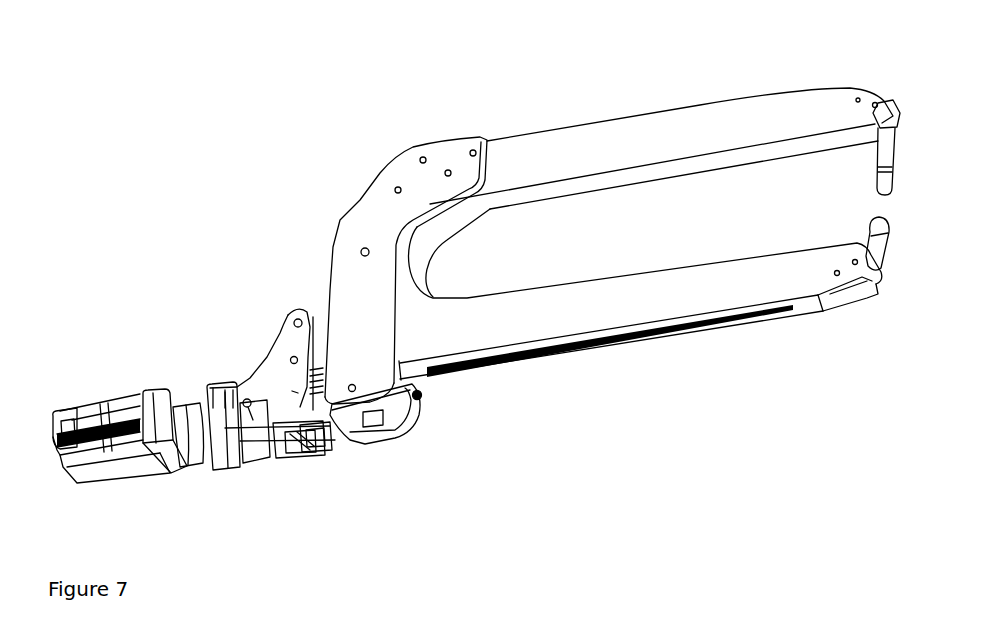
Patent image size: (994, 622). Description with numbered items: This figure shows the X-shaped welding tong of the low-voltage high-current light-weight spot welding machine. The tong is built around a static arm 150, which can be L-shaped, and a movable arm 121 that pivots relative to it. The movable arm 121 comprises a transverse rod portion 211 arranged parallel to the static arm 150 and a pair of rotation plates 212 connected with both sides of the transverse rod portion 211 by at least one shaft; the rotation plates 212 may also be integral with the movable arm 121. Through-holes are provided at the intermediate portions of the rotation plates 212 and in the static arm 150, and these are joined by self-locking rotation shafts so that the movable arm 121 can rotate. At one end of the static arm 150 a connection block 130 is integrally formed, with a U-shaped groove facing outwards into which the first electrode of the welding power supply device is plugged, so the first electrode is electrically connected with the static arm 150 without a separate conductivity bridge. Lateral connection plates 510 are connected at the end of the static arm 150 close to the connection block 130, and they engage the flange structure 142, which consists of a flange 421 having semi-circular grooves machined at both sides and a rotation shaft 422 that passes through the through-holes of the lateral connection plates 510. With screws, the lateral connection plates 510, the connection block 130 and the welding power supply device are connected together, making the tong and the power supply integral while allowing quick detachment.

The movable arm 121 is at (612, 212).
The transverse rod portion 211 is at (503, 168).
The rotation plate 212 is at (402, 212).
The connection block 130 is at (316, 306).
The static arm 150 is at (567, 322).
The flange structure 142 is at (280, 477).
The flange 421 is at (243, 460).
The rotation shaft 422 is at (287, 460).
The lateral connection plate 510 is at (318, 418).